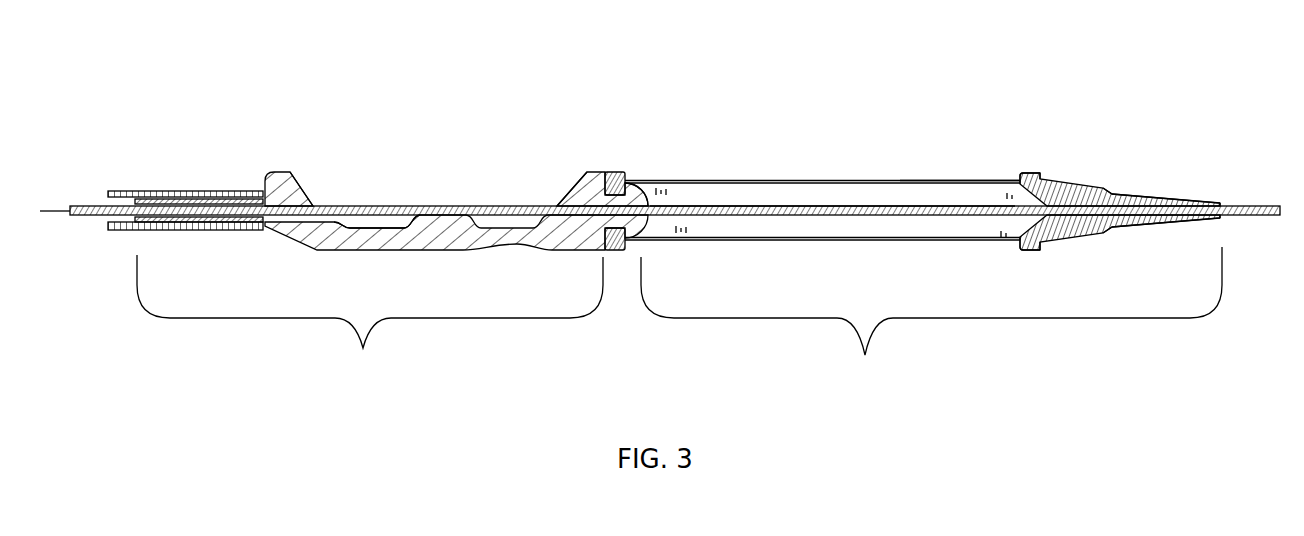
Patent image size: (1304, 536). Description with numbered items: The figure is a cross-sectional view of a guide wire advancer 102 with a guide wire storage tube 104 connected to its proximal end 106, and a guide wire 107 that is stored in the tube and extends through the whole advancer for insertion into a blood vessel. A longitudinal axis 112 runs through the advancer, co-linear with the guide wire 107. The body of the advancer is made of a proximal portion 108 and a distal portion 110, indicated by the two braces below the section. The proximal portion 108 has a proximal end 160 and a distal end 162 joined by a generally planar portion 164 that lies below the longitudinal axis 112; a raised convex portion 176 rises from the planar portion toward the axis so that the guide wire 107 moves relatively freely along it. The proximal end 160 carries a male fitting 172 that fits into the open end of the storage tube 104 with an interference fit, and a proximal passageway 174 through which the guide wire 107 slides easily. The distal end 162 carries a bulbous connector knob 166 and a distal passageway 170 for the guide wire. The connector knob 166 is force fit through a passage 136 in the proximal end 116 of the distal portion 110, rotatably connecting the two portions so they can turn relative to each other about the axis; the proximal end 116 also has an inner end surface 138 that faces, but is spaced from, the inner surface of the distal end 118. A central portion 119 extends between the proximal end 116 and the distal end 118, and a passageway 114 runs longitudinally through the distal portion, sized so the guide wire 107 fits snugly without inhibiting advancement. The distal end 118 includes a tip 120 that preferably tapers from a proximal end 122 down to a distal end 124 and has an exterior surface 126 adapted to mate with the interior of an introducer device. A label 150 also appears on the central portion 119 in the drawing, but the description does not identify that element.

The guide wire advancer 102 is at (822, 140).
The guide wire storage tube 104 is at (185, 168).
The proximal end 106 is at (266, 179).
The guide wire 107 is at (898, 203).
The proximal portion 108 is at (370, 322).
The distal portion 110 is at (931, 323).
The longitudinal axis 112 is at (90, 217).
The passageway 114 is at (1136, 211).
The proximal end 116 is at (622, 174).
The distal end 118 is at (1160, 195).
The central portion 119 is at (830, 180).
The tip 120 is at (1205, 222).
The proximal end 122 is at (1057, 249).
The distal end 124 is at (1210, 200).
The exterior surface 126 is at (1115, 190).
The passage 136 is at (620, 251).
The inner end surface 138 is at (632, 178).
The outer tube distal portion 150 is at (972, 179).
The proximal end 160 is at (287, 150).
The distal end 162 is at (616, 159).
The generally planar portion 164 is at (456, 223).
The bulbous connector knob 166 is at (652, 188).
The distal passageway 170 is at (565, 195).
The male fitting 172 is at (175, 197).
The proximal passageway 174 is at (298, 202).
The raised convex portion 176 is at (416, 212).